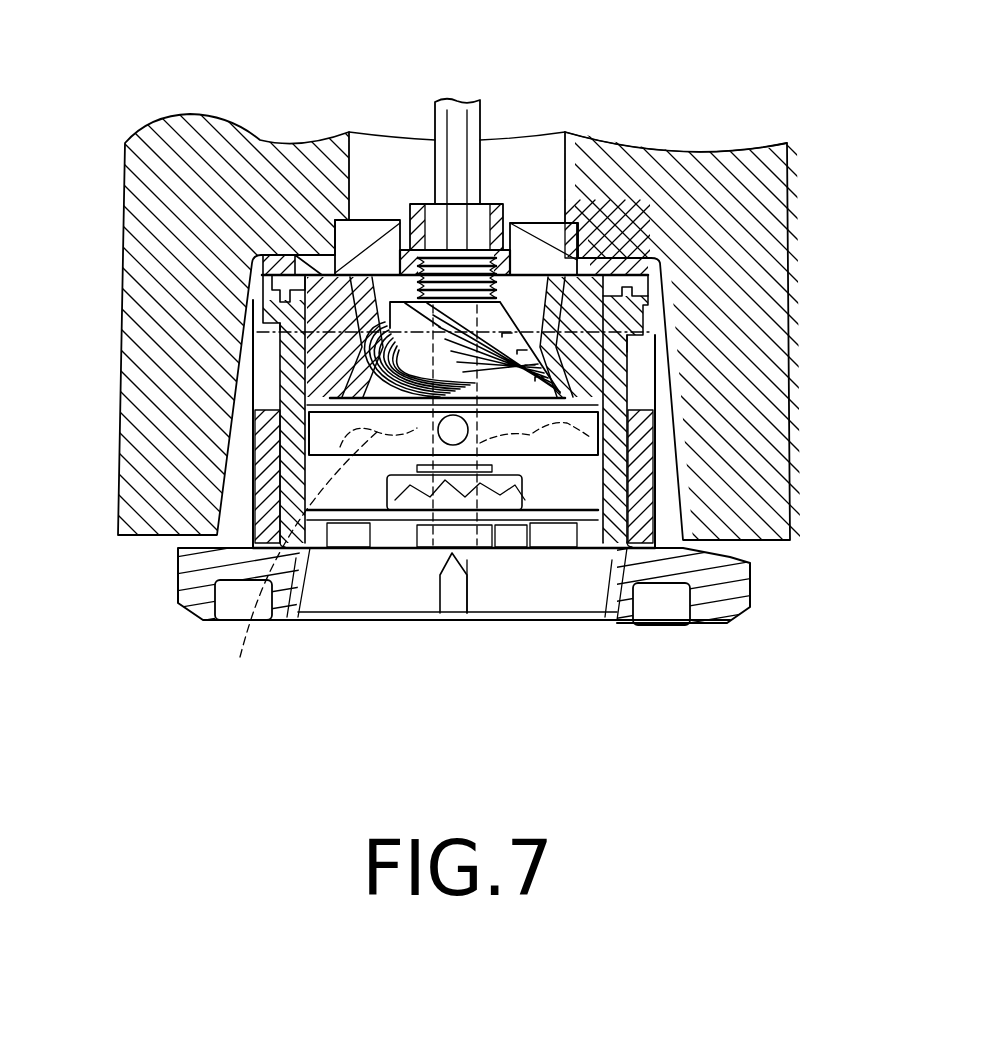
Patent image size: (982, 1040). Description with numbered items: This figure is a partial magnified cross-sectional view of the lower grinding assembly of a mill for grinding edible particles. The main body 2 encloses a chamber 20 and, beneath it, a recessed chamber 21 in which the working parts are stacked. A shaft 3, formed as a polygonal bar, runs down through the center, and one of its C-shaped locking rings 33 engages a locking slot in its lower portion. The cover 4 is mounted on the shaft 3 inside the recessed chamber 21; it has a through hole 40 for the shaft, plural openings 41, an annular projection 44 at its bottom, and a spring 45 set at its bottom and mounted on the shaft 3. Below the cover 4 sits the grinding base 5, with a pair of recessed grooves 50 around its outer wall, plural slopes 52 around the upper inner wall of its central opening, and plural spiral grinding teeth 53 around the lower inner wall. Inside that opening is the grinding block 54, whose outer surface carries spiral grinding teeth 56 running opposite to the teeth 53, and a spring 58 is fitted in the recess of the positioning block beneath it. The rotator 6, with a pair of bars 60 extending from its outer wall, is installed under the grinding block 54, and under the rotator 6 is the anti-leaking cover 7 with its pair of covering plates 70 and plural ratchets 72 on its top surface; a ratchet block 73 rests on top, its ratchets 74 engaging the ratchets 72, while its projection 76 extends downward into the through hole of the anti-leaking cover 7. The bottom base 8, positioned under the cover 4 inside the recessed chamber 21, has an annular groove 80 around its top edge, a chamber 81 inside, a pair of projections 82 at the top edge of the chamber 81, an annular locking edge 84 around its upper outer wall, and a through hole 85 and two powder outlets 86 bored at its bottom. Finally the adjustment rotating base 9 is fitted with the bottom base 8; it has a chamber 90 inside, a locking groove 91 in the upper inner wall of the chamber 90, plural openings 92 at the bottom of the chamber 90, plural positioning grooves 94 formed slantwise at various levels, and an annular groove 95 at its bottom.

The main body 2 is at (750, 213).
The shaft 3 is at (468, 117).
The cover 4 is at (693, 150).
The grinding base 5 is at (337, 273).
The rotator 6 is at (513, 457).
The anti-leaking cover 7 is at (452, 553).
The bottom base 8 is at (615, 427).
The adjustment rotating base 9 is at (727, 607).
The chamber 20 is at (540, 167).
The recessed chamber 21 is at (663, 395).
The C-shaped locking ring 33 is at (448, 150).
The through hole 40 is at (488, 215).
The openings 41 is at (643, 257).
The annular projection 44 is at (625, 258).
The spring 45 is at (485, 217).
The recessed grooves 50 is at (328, 272).
The slopes 52 is at (367, 297).
The spiral grinding teeth 53 is at (250, 255).
The grinding block 54 is at (598, 250).
The spiral grinding teeth 56 is at (376, 358).
The spring 58 is at (400, 462).
The bars 60 is at (480, 457).
The covering plates 70 is at (548, 545).
The ratchets 72 is at (422, 545).
The ratchet block 73 is at (342, 545).
The ratchets 74 is at (383, 540).
The projection 76 is at (467, 545).
The annular groove 80 is at (640, 285).
The chamber 81 is at (712, 555).
The projections 82 is at (322, 272).
The annular locking edge 84 is at (640, 372).
The through hole 85 is at (550, 545).
The powder outlets 86 is at (573, 545).
The chamber 90 is at (278, 490).
The locking groove 91 is at (655, 338).
The openings 92 is at (505, 602).
The positioning grooves 94 is at (242, 650).
The annular groove 95 is at (667, 612).